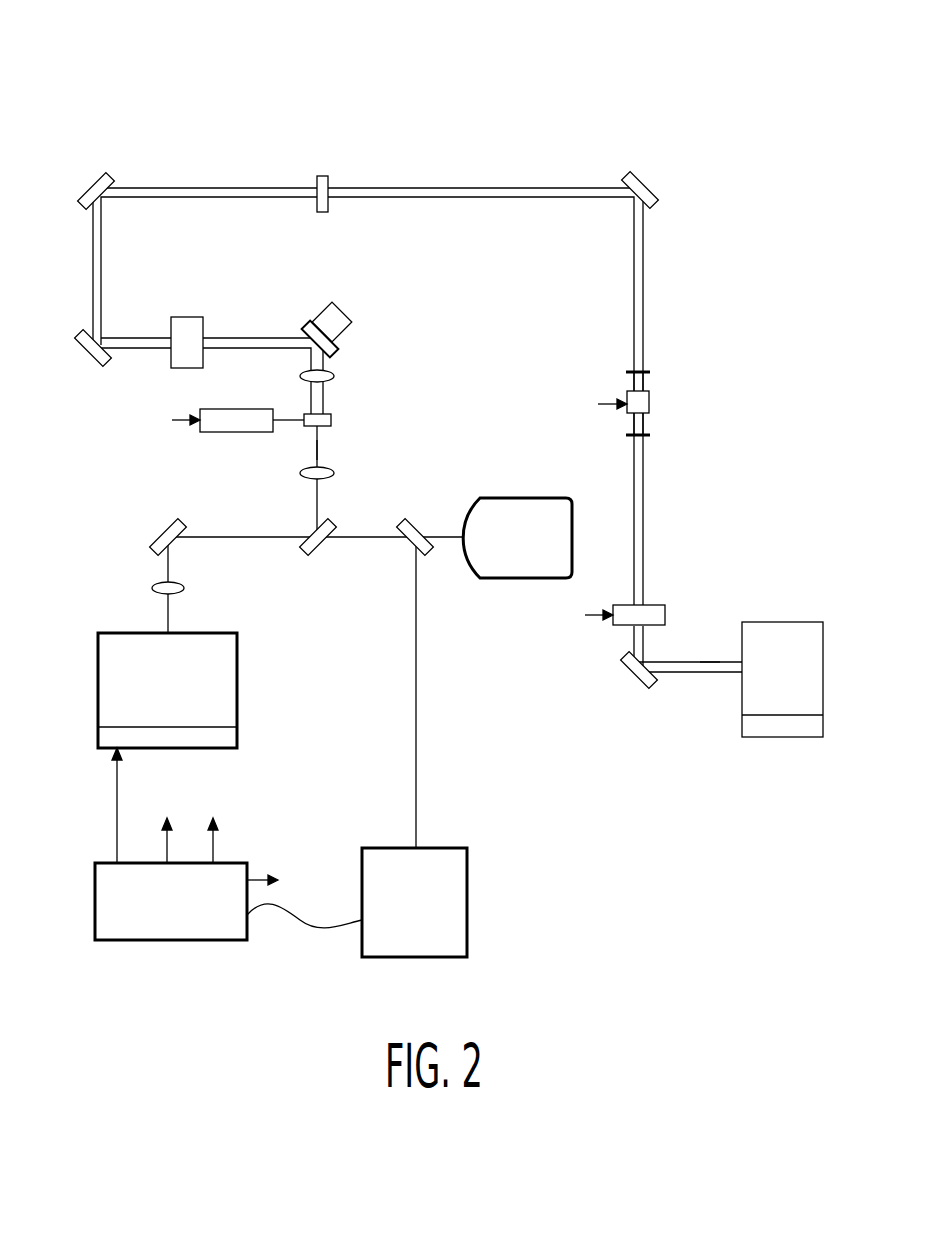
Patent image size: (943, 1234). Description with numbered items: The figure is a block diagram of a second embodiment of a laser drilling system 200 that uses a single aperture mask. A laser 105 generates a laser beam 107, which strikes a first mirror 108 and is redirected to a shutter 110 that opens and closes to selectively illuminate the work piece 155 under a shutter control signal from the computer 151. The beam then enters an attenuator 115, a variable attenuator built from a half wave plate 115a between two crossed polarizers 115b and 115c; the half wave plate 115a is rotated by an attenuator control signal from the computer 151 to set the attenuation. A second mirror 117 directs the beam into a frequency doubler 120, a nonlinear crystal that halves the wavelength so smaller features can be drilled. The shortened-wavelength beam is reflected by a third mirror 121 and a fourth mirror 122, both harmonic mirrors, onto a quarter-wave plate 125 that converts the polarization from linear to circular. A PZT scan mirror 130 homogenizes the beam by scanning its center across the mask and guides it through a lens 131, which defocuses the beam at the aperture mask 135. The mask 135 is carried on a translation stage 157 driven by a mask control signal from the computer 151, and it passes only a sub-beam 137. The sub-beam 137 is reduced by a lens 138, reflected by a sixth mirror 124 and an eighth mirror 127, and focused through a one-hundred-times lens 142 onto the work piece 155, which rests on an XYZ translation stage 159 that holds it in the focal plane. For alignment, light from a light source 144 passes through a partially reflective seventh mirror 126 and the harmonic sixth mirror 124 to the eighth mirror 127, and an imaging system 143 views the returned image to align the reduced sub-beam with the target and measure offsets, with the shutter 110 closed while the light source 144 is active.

The drilling system 200 is at (103, 72).
The laser 105 is at (775, 737).
The laser beam 107 is at (695, 675).
The first mirror 108 is at (628, 676).
The shutter 110 is at (666, 612).
The attenuator 115 is at (740, 374).
The half wave plate 115a is at (626, 392).
The crossed polarizer 115b is at (648, 370).
The crossed polarizer 115c is at (648, 438).
The second mirror 117 is at (648, 184).
The frequency doubler 120 is at (322, 176).
The third mirror 121 is at (91, 182).
The fourth mirror 122 is at (88, 357).
The sixth mirror 124 is at (311, 530).
The quarter-wave plate 125 is at (187, 317).
The seventh mirror 126 is at (422, 526).
The eighth mirror 127 is at (154, 534).
The PZT scan mirror 130 is at (345, 306).
The lens 131 is at (335, 376).
The aperture mask 135 is at (331, 419).
The sub-beam 137 is at (316, 447).
The lens 138 is at (335, 473).
The 100× lens 142 is at (152, 588).
The imaging system 143 is at (429, 942).
The light source 144 is at (503, 579).
The computer 151 is at (185, 930).
The work piece 155 is at (183, 710).
The translation stage 157 is at (238, 409).
The translation stage 159 is at (98, 738).